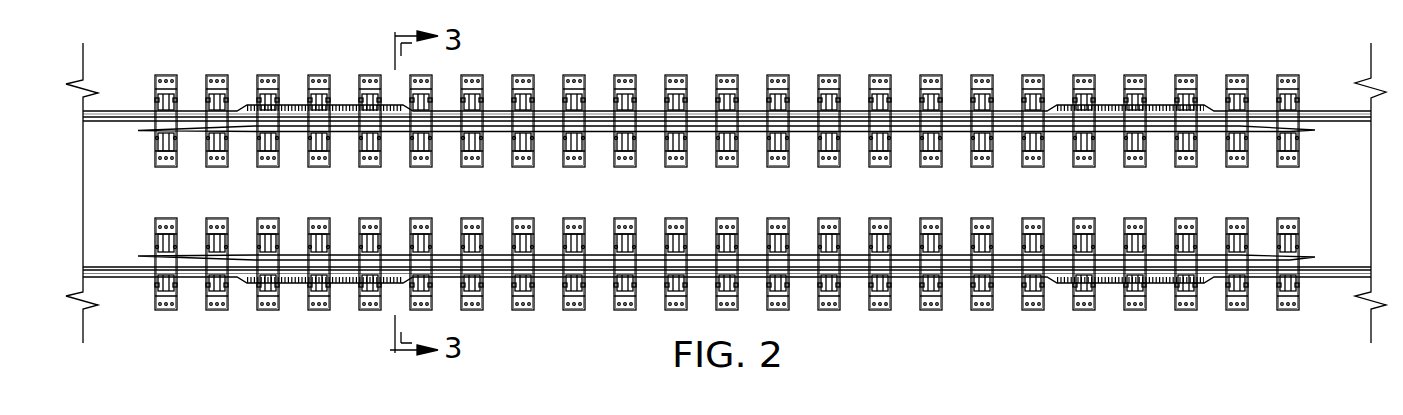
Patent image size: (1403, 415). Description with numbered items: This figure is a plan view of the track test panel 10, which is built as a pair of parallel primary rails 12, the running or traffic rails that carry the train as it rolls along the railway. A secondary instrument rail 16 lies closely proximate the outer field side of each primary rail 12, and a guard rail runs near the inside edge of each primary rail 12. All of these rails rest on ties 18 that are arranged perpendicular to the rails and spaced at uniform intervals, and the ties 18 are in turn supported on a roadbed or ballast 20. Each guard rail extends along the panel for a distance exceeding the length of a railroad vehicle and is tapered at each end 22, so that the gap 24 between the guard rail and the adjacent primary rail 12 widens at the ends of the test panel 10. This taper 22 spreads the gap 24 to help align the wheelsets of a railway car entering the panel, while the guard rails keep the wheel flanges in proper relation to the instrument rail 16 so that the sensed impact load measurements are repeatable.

The track test panel 10 is at (1009, 57).
The primary rail 12 is at (1313, 111).
The secondary instrument rail 16 is at (1102, 107).
The tie 18 is at (828, 75).
The ballast 20 is at (622, 208).
The tapered end 22 is at (898, 258).
The gap 24 is at (1157, 122).